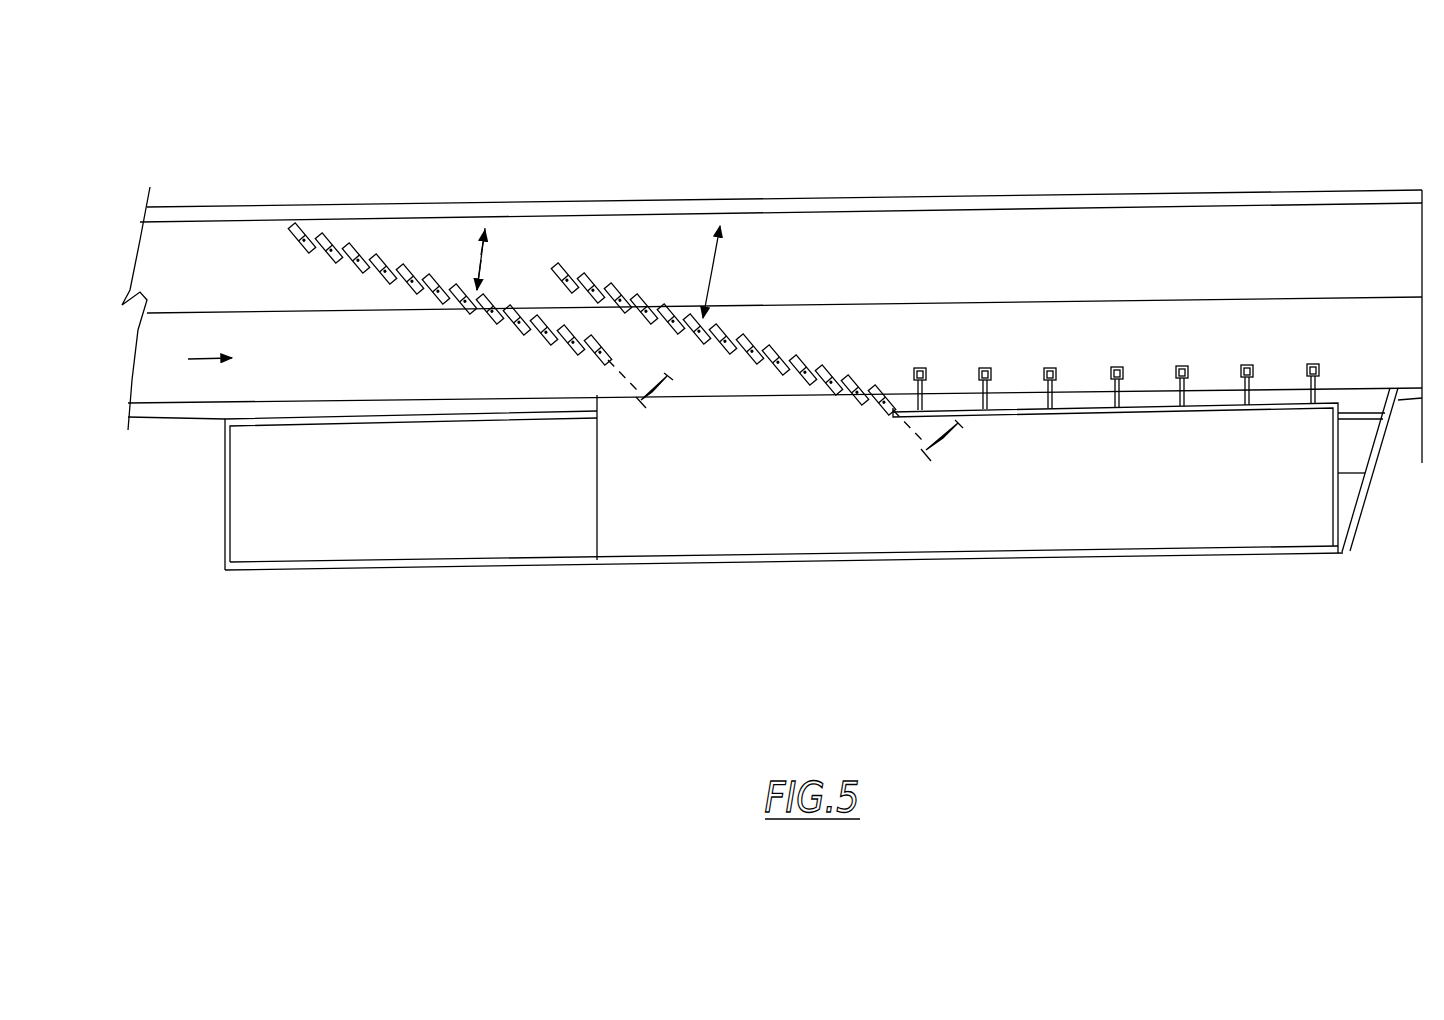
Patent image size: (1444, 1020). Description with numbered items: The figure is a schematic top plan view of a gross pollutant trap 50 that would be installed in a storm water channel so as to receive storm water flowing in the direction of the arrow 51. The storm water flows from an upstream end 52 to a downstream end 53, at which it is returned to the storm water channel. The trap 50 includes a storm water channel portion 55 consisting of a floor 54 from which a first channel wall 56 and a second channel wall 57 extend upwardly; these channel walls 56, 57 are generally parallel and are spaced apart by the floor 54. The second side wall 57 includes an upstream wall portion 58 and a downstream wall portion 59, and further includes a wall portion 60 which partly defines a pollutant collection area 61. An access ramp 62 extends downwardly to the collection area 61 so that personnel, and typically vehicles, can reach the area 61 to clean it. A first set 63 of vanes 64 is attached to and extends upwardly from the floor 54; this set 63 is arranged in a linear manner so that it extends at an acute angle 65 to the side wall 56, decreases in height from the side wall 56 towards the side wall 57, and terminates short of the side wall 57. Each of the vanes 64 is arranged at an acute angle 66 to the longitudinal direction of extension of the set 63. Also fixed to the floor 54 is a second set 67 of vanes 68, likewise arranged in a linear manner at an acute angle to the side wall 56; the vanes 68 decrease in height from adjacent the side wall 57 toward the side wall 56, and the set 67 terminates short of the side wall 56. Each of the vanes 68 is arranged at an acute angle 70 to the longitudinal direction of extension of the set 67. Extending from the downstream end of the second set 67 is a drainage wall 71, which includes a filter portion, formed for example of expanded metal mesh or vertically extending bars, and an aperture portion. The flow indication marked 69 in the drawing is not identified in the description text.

The gross pollutant trap 50 is at (822, 168).
The arrow 51 is at (206, 352).
The upstream end 52 is at (190, 270).
The downstream end 53 is at (1358, 268).
The floor 54 is at (897, 273).
The storm water channel portion 55 is at (655, 194).
The first channel wall 56 is at (1058, 190).
The second channel wall 57 is at (161, 462).
The upstream wall portion 58 is at (200, 420).
The downstream wall portion 59 is at (1388, 465).
The wall portion 60 is at (1298, 555).
The pollutant collection area 61 is at (1138, 511).
The access ramp 62 is at (390, 514).
The first set of vanes 63 is at (330, 285).
The vanes 64 is at (427, 265).
The acute angle 65 is at (480, 258).
The acute angle 66 is at (653, 398).
The second set of vanes 67 is at (758, 292).
The vanes 68 is at (790, 347).
The air flow through second louvers 69 is at (711, 278).
The acute angle 70 is at (942, 448).
The drainage wall 71 is at (1149, 362).